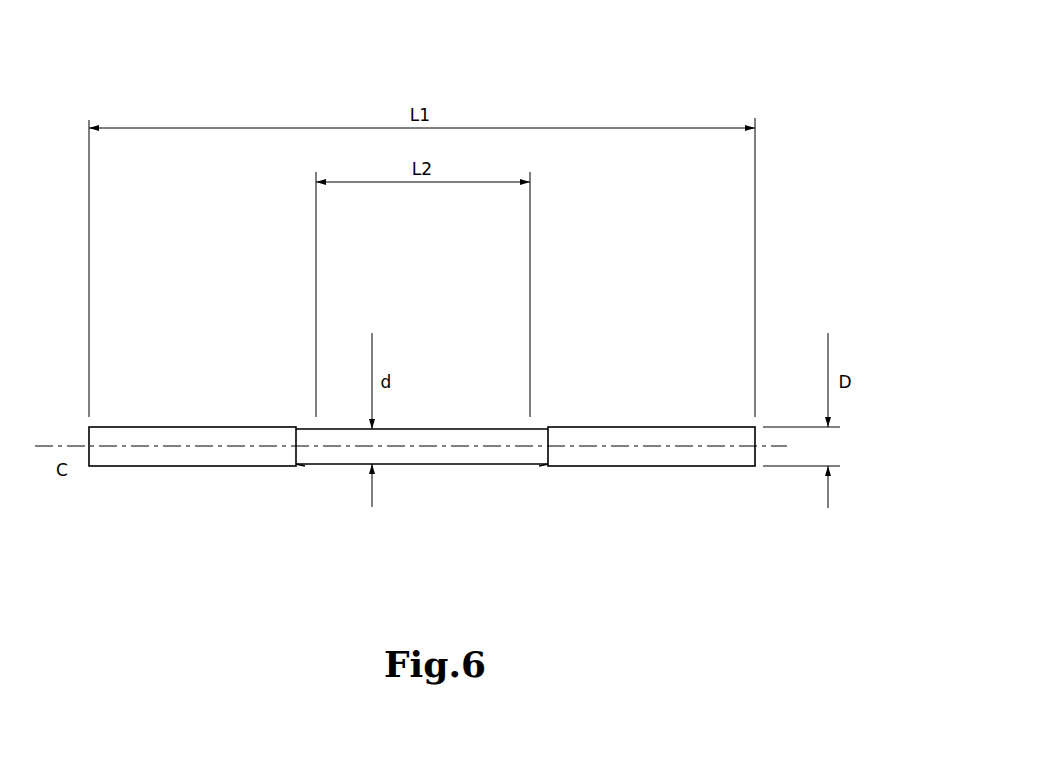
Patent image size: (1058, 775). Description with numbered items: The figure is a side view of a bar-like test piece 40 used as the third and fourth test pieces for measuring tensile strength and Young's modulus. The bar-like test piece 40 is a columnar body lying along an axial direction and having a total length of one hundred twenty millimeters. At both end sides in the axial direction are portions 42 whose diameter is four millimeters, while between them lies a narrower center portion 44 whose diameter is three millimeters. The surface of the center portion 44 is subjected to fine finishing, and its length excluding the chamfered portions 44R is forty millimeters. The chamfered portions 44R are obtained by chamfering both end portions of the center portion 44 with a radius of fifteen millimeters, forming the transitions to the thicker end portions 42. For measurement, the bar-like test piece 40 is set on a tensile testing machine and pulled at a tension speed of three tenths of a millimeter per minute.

The bar-like test piece 40 is at (434, 326).
The portions on both end sides 42 is at (203, 460).
The center portion 44 is at (428, 460).
The chamfered portions 44R is at (303, 468).